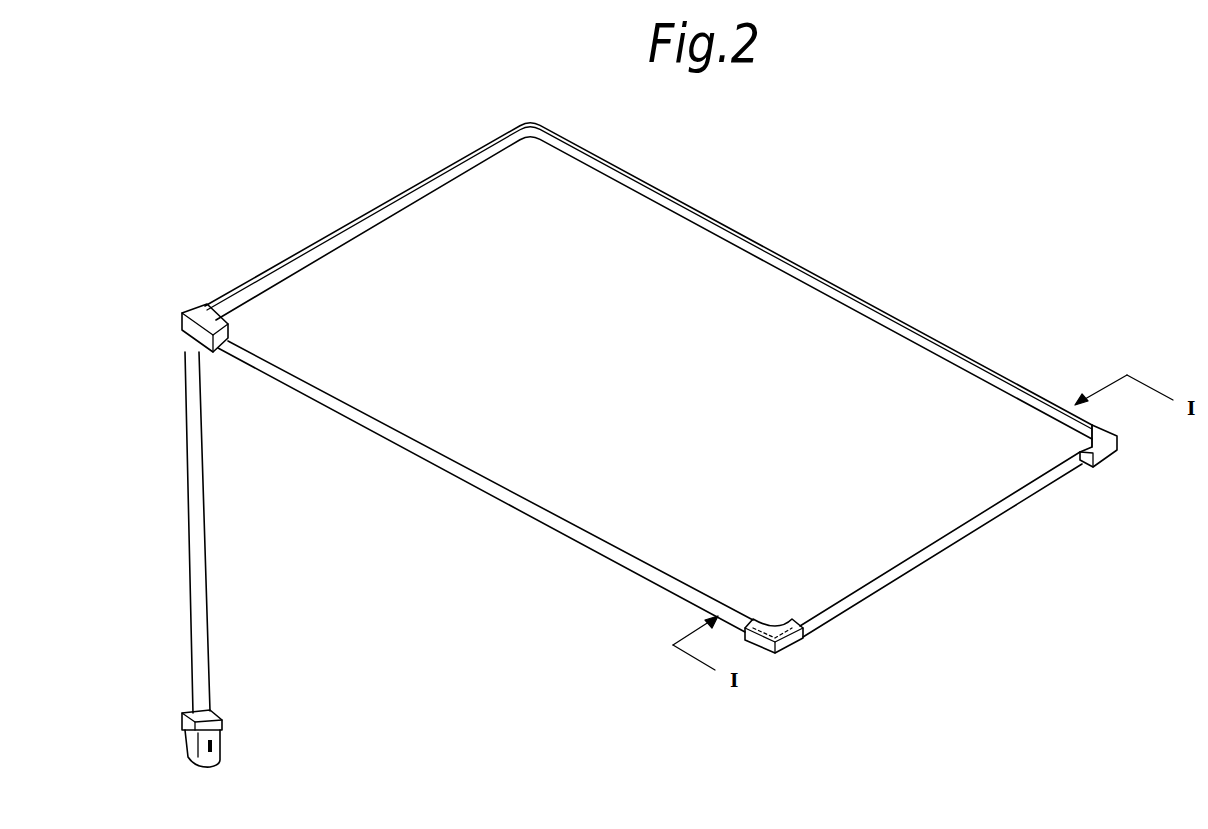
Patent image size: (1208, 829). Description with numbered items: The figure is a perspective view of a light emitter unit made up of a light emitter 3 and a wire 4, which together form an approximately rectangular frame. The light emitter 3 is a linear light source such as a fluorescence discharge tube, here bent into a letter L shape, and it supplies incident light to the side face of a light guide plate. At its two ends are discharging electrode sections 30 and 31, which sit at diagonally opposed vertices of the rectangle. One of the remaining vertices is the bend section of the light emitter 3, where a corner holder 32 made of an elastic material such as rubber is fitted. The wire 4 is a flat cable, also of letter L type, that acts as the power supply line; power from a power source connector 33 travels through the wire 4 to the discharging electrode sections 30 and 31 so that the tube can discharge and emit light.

The light emitter 3 is at (517, 502).
The wire 4 is at (681, 203).
The discharging electrode section 30 is at (1105, 457).
The discharging electrode section 31 is at (198, 315).
The corner holder 32 is at (760, 643).
The power source connector 33 is at (215, 747).